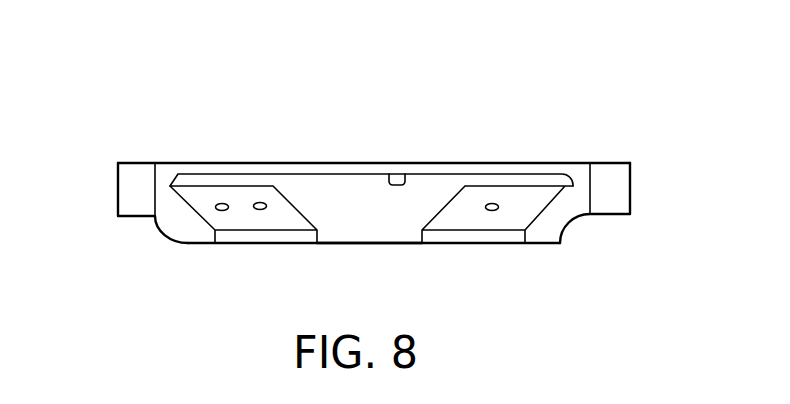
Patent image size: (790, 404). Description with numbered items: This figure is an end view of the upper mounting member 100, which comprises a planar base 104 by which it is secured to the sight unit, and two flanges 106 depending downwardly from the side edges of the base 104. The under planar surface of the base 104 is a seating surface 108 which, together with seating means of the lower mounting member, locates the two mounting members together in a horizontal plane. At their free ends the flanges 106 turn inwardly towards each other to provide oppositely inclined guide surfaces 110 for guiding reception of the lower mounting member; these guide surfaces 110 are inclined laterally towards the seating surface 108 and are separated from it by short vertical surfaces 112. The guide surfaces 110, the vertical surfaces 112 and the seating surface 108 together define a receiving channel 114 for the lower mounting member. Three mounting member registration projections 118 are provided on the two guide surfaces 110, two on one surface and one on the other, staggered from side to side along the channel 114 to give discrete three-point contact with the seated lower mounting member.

The upper mounting member 100 is at (541, 118).
The planar base 104 is at (337, 163).
The flanges 106 is at (178, 214).
The seating surface 108 is at (410, 174).
The guide surfaces 110 is at (247, 213).
The short vertical surfaces 112 is at (178, 175).
The receiving channel 114 is at (392, 227).
The mounting member registration projections 118 is at (222, 210).